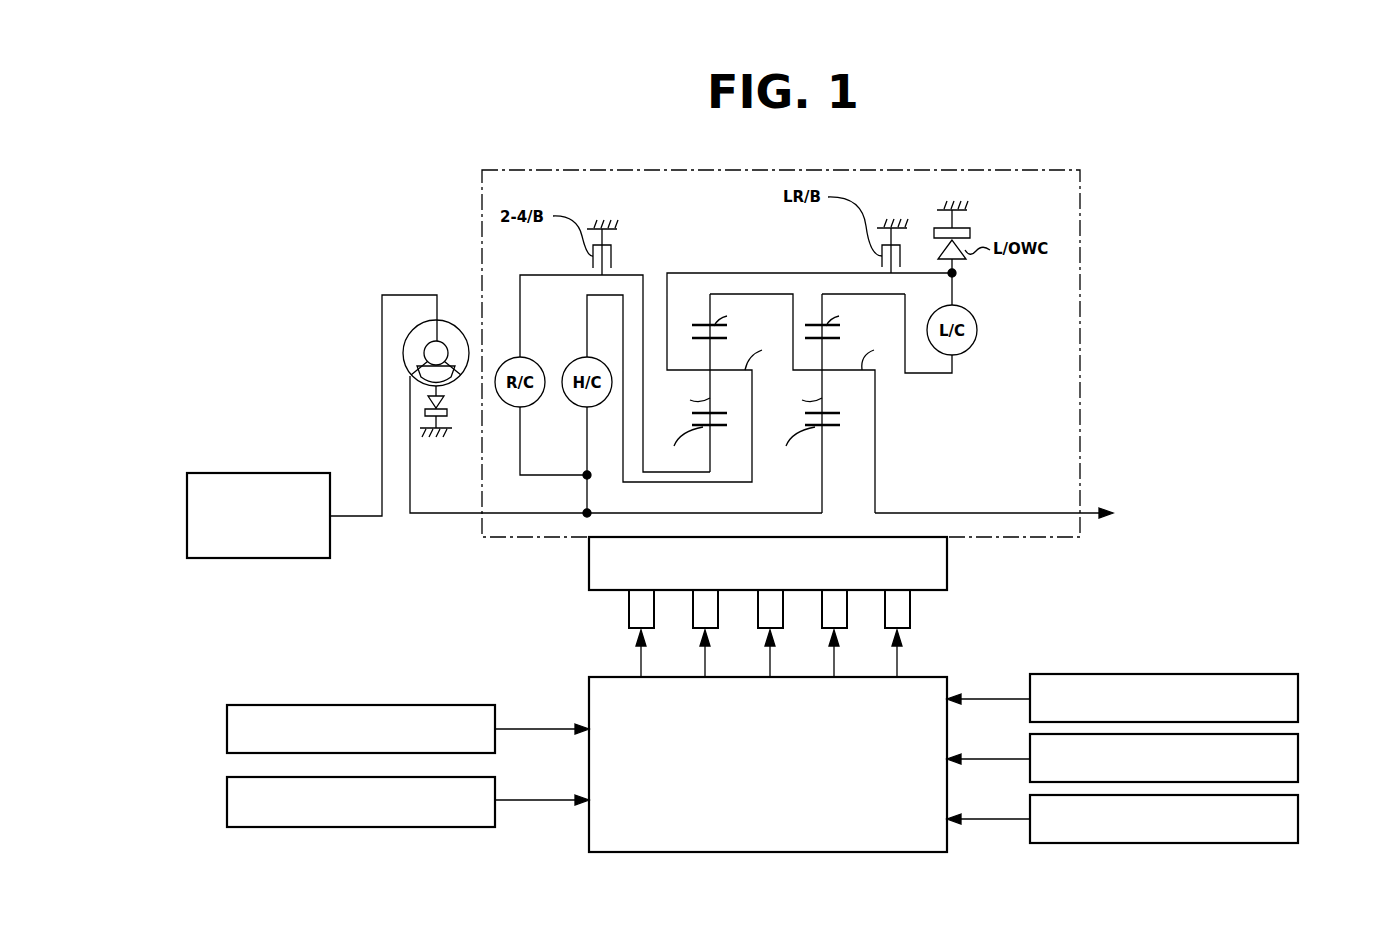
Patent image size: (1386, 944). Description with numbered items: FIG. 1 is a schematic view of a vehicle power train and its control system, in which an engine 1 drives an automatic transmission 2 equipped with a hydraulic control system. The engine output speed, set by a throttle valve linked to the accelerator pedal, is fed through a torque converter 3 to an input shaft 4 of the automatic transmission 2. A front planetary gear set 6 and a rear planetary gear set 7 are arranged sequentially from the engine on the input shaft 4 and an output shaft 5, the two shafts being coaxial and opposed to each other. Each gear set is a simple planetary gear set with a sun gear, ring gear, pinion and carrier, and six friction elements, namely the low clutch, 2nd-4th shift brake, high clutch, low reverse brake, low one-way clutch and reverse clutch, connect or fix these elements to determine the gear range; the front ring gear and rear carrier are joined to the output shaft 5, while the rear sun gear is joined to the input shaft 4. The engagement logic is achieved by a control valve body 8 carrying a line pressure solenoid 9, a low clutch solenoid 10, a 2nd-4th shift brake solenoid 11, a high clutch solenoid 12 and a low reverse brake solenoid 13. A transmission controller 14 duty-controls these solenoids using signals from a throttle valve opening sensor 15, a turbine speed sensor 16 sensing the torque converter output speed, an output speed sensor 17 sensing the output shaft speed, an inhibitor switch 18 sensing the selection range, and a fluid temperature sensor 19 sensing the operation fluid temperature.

The engine 1 is at (233, 473).
The automatic transmission 2 is at (1081, 212).
The torque converter 3 is at (449, 314).
The input shaft 4 is at (440, 514).
The output shaft 5 is at (982, 512).
The front planetary gear set 6 is at (690, 292).
The rear planetary gear set 7 is at (800, 292).
The control valve body 8 is at (948, 565).
The line pressure solenoid 9 is at (628, 612).
The low clutch solenoid 10 is at (693, 612).
The 2nd-4th shift brake solenoid 11 is at (758, 612).
The high clutch solenoid 12 is at (822, 612).
The low reverse brake solenoid 13 is at (885, 612).
The transmission controller 14 is at (916, 677).
The throttle valve opening sensor 15 is at (226, 730).
The turbine speed sensor 16 is at (226, 805).
The output speed sensor 17 is at (1300, 703).
The inhibitor switch 18 is at (1300, 763).
The fluid temperature sensor 19 is at (1300, 823).